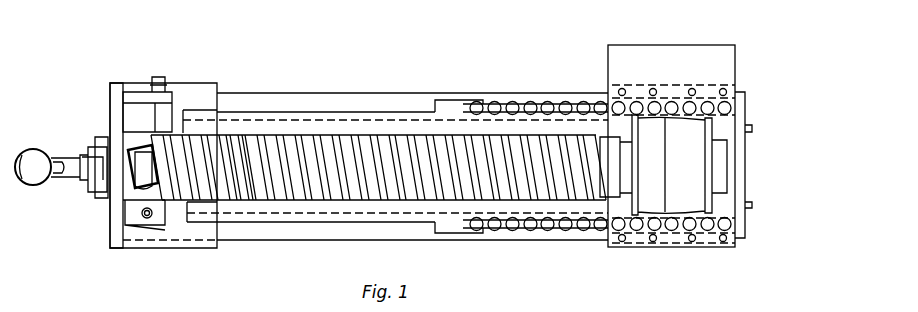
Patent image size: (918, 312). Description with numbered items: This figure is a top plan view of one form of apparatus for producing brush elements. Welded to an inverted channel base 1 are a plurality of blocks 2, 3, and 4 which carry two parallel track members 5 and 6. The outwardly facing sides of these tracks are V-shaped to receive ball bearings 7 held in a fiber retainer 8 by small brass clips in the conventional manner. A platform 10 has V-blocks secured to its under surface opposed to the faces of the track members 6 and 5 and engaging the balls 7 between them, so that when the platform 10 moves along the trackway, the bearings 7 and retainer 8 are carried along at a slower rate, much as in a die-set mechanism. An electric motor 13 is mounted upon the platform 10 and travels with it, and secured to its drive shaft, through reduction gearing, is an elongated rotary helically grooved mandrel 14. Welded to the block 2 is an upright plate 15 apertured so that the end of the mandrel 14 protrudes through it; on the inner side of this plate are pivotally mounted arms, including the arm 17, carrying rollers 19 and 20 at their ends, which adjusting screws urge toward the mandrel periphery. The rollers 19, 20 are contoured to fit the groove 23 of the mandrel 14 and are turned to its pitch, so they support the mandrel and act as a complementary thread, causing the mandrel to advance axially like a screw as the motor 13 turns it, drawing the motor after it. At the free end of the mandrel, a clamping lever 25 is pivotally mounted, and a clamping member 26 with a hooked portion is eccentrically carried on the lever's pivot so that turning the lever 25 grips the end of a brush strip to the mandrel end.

The inverted channel base 1 is at (383, 93).
The block 2 is at (213, 87).
The block 3 is at (450, 100).
The block 4 is at (740, 93).
The track member 5 is at (327, 112).
The track member 6 is at (338, 213).
The ball bearings 7 is at (583, 228).
The fiber retainer 8 is at (538, 104).
The platform 10 is at (720, 62).
The electric motor 13 is at (690, 173).
The rotary helically grooved mandrel 14 is at (298, 180).
The upright plate 15 is at (110, 112).
The arm 17 is at (135, 113).
The roller 19 is at (138, 150).
The roller 20 is at (160, 133).
The groove 23 is at (300, 140).
The clamping lever 25 is at (35, 185).
The clamping member 26 is at (65, 180).